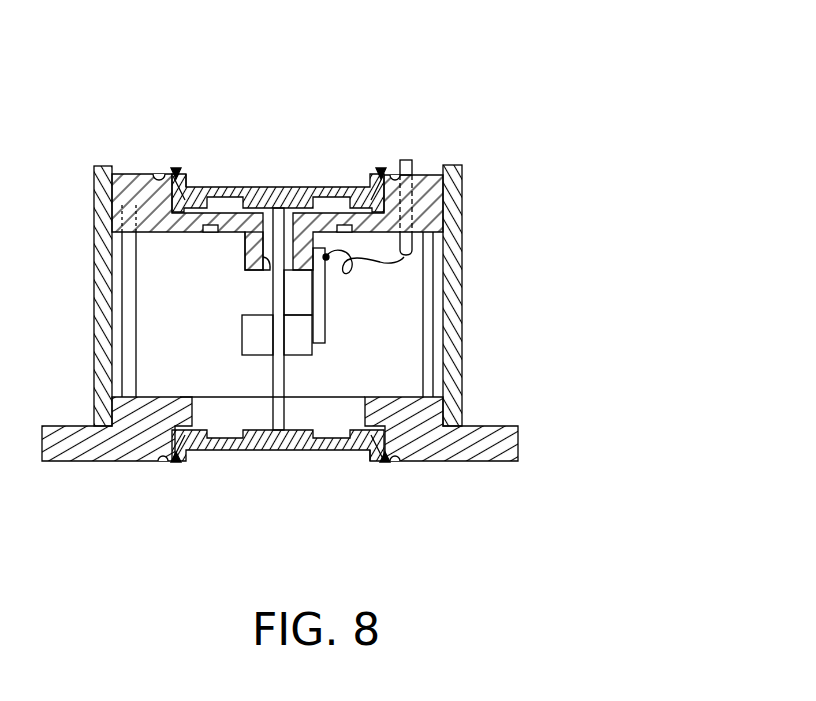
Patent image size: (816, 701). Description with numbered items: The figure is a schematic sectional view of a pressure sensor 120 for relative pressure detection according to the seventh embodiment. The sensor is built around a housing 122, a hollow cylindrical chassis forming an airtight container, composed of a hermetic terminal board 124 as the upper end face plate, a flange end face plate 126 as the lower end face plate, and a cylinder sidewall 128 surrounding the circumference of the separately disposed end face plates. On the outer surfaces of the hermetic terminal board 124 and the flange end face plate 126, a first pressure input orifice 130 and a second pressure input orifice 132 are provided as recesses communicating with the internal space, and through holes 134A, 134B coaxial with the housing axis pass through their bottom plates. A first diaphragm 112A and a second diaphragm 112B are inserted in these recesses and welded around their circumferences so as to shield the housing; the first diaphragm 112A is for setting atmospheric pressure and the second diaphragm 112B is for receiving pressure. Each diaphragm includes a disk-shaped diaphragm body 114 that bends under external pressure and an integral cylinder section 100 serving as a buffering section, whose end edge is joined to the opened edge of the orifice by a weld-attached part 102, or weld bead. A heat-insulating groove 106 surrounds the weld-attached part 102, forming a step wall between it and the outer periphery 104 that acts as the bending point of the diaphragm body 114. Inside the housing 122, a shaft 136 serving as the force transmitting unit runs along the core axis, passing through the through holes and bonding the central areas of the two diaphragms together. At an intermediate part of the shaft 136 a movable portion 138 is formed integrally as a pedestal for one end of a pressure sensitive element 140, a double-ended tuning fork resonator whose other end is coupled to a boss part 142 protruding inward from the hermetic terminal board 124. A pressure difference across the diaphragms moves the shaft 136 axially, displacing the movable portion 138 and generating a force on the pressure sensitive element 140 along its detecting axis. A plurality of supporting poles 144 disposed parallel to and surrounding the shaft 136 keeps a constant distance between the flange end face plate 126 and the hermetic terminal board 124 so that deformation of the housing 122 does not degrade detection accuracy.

The cylinder section 100 is at (182, 173).
The weld-attached part 102 is at (176, 168).
The outer periphery 104 is at (367, 174).
The heat-insulating groove 106 is at (158, 174).
The first diaphragm 112A is at (279, 178).
The second diaphragm 112B is at (259, 460).
The diaphragm body 114 is at (320, 187).
The pressure sensor 120 is at (498, 82).
The housing 122 is at (548, 200).
The hermetic terminal board 124 is at (428, 197).
The flange end face plate 126 is at (486, 430).
The cylinder sidewall 128 is at (462, 290).
The first pressure input orifice 130 is at (187, 174).
The second pressure input orifice 132 is at (374, 452).
The through hole 134A is at (264, 272).
The through hole 134B is at (195, 397).
The shaft 136 is at (287, 375).
The movable portion 138 is at (242, 335).
The pressure sensitive element 140 is at (325, 337).
The boss part 142 is at (243, 255).
The supporting poles 144 is at (118, 300).